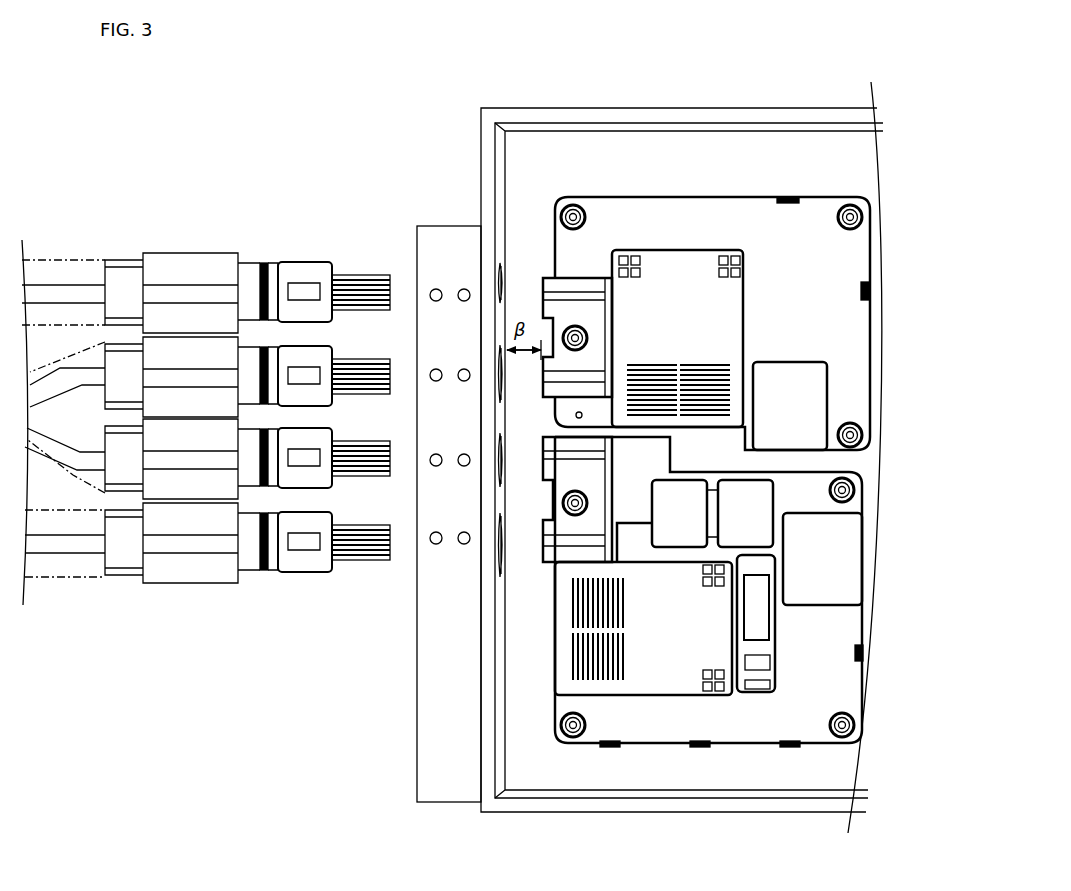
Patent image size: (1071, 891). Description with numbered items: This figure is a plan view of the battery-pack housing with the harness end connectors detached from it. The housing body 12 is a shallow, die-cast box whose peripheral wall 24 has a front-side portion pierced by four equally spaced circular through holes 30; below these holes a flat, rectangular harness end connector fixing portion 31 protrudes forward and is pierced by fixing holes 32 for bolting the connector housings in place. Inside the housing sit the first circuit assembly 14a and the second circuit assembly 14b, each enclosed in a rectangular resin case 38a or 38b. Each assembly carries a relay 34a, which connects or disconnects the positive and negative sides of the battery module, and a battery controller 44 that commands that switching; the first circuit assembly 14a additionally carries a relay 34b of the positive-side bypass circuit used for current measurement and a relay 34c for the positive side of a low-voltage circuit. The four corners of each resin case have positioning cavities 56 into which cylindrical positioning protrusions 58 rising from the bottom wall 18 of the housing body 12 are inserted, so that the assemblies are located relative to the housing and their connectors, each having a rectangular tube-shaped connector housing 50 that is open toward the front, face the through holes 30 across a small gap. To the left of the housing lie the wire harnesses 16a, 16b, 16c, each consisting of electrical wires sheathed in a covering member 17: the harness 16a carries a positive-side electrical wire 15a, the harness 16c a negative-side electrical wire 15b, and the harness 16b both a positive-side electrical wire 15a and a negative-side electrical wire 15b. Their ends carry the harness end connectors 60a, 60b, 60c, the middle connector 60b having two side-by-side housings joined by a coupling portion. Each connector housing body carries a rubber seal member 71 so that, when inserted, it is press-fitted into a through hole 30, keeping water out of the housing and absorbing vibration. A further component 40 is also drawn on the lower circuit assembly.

The housing body 12 is at (596, 98).
The bottom wall 18 is at (790, 118).
The first circuit assembly 14a is at (850, 760).
The second circuit assembly 14b is at (759, 188).
The peripheral wall 24 is at (515, 774).
The through hole 30 is at (505, 300).
The harness end connector fixing portion 31 is at (448, 236).
The fixing hole 32 is at (436, 301).
The relay 34a is at (790, 385).
The relay 34b is at (745, 510).
The relay 34c is at (680, 512).
The resin case 38a is at (813, 690).
The resin case 38b is at (655, 212).
The connector 40 is at (762, 628).
The battery controller 44 is at (695, 318).
The connector housing 50 is at (555, 289).
The positioning cavity 56 is at (856, 222).
The positioning protrusion 58 is at (851, 223).
The harness end connector 60a is at (215, 602).
The harness end connector 60b is at (210, 330).
The harness end connector 60c is at (183, 246).
The seal member 71 is at (268, 396).
The positive-side electrical wire 15a is at (48, 448).
The negative-side electrical wire 15b is at (75, 293).
The wire harness 16a is at (88, 603).
The wire harness 16b is at (80, 349).
The wire harness 16c is at (85, 243).
The covering member 17 is at (56, 263).